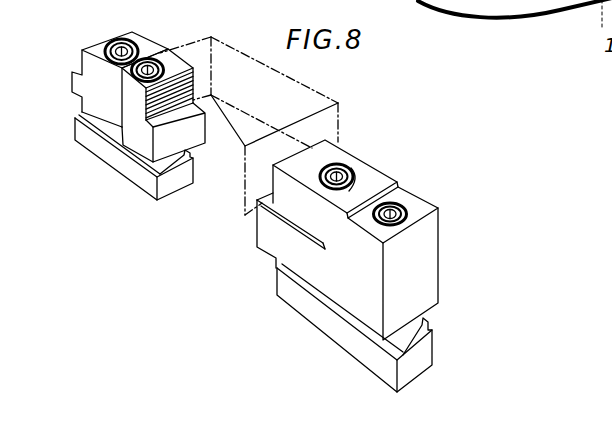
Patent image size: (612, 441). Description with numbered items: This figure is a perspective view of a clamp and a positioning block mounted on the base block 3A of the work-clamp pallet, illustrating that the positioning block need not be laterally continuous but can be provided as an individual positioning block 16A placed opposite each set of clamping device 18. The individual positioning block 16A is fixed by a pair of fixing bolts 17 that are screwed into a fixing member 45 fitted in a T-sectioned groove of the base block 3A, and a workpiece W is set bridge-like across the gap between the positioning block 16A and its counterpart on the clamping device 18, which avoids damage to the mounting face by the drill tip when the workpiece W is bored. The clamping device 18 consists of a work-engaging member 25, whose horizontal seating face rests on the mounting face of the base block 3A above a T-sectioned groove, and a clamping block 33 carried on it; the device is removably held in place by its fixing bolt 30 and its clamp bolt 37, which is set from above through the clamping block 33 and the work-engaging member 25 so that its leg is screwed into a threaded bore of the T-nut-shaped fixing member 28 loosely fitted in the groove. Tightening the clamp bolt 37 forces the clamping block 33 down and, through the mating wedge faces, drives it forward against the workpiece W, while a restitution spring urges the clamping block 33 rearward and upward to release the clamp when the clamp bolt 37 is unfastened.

The base block 3A is at (482, 4).
The workpiece W is at (222, 178).
The individual positioning block 16A is at (142, 35).
The fixing bolts 17 is at (118, 42).
The fixing member 45 is at (135, 173).
The clamping device 18 is at (345, 236).
The work-engaging member 25 is at (422, 256).
The clamping block 33 is at (345, 188).
The fixing bolt 30 is at (403, 198).
The clamp bolt 37 is at (297, 203).
The fixing member 28 is at (313, 312).